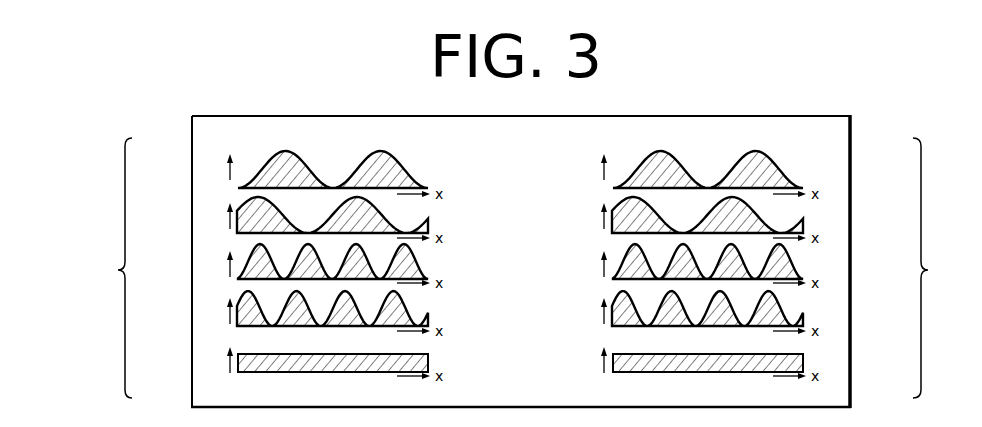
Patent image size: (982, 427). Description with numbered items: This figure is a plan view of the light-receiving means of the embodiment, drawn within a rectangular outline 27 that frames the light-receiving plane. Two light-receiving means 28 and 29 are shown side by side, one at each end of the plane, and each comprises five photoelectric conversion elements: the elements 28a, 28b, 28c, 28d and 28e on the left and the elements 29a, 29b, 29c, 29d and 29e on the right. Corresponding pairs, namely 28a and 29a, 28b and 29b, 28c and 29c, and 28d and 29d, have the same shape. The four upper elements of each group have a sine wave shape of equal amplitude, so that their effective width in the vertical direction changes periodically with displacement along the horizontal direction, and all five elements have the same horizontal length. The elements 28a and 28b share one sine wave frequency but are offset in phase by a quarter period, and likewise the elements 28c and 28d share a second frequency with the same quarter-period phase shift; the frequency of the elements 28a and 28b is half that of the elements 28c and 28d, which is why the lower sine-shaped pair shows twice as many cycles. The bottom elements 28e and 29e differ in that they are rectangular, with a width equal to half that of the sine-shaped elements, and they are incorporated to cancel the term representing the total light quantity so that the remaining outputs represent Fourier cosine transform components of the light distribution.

The display screen 27 is at (724, 116).
The light-receiving means 28 is at (263, 268).
The photoelectric conversion element 28a is at (238, 187).
The photoelectric conversion element 28b is at (237, 233).
The photoelectric conversion element 28c is at (238, 279).
The photoelectric conversion element 28d is at (237, 326).
The photoelectric conversion element 28e is at (238, 372).
The light-receiving means 29 is at (765, 268).
The photoelectric conversion element 29a is at (792, 178).
The photoelectric conversion element 29b is at (803, 224).
The photoelectric conversion element 29c is at (803, 276).
The photoelectric conversion element 29d is at (803, 320).
The photoelectric conversion element 29e is at (803, 366).